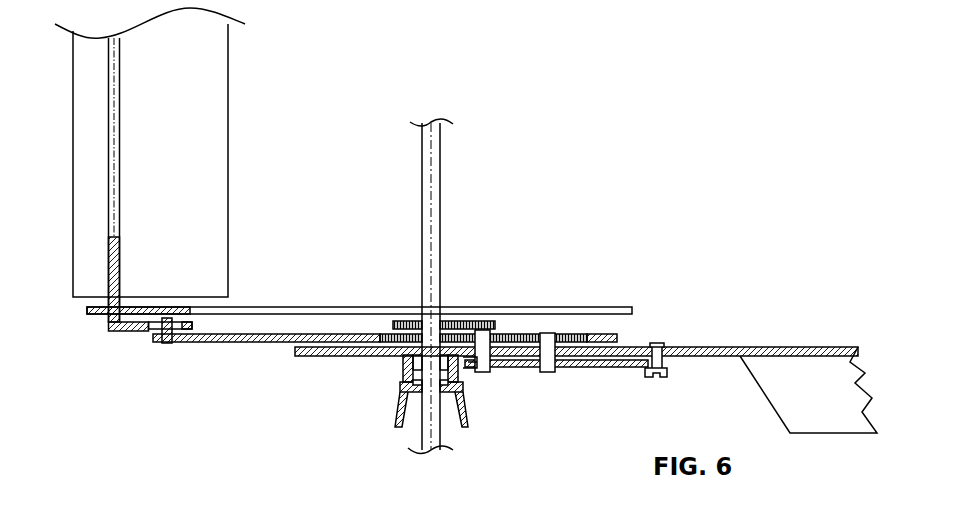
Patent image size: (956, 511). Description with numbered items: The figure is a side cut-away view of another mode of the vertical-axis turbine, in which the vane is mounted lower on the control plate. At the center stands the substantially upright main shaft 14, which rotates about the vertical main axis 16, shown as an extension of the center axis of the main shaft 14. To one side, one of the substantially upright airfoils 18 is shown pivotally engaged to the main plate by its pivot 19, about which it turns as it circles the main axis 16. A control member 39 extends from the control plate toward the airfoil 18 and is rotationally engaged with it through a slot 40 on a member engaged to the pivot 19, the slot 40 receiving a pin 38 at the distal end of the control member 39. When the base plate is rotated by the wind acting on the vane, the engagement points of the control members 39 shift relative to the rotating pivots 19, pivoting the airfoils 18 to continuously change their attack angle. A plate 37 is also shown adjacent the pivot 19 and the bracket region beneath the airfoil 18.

The main shaft 14 is at (440, 195).
The main axis 16 is at (430, 252).
The airfoil 18 is at (228, 113).
The pivot 19 is at (120, 105).
The plate 37 is at (105, 320).
The pin 38 is at (172, 330).
The control member 39 is at (247, 342).
The slot 40 is at (153, 329).